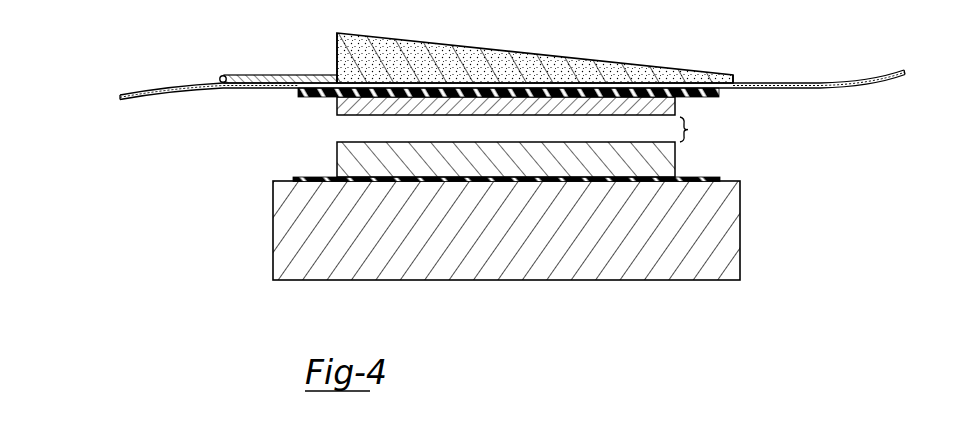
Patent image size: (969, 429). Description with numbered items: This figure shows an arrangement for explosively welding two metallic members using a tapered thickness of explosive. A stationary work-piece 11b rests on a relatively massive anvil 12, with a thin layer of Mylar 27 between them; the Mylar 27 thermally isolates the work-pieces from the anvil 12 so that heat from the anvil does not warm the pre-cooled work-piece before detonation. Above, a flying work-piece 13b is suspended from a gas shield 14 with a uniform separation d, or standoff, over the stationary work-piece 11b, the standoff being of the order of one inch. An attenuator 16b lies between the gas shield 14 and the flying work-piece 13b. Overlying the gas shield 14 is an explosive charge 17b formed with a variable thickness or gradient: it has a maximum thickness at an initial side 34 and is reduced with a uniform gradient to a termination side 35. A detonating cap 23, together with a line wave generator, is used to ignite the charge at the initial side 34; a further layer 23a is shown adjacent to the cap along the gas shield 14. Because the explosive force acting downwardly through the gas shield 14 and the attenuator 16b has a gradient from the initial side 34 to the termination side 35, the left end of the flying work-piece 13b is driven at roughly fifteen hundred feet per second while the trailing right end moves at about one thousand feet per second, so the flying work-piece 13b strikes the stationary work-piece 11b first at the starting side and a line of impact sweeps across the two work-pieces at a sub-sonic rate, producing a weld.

The anvil 12 is at (274, 213).
The Mylar 27 is at (688, 176).
The stationary work-piece 11b is at (528, 146).
The uniform separation d is at (691, 129).
The flying work-piece 13b is at (337, 113).
The attenuator 16b is at (300, 94).
The gas shield 14 is at (165, 86).
The thin layer on membrane 23a is at (275, 76).
The detonating cap 23 is at (220, 78).
The explosive charge 17b is at (448, 47).
The initial side 34 is at (337, 58).
The termination side 35 is at (733, 79).